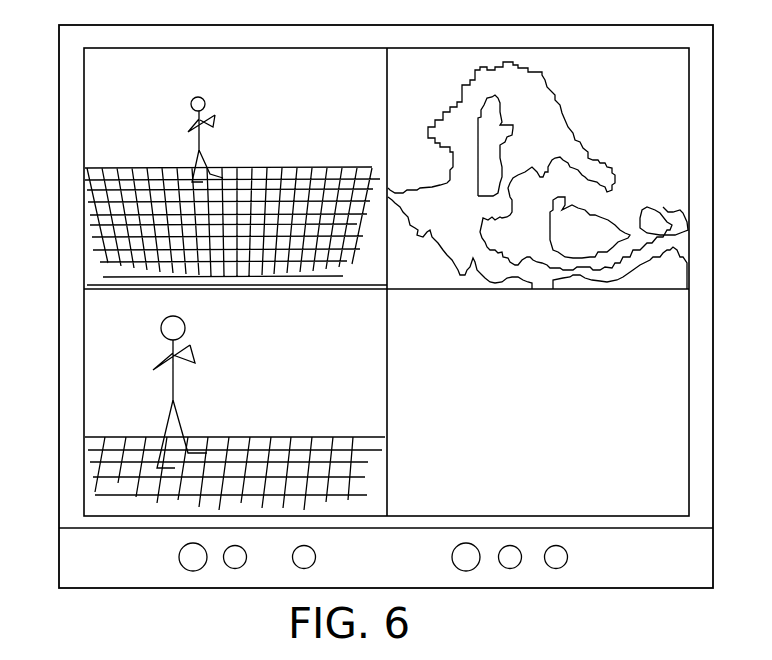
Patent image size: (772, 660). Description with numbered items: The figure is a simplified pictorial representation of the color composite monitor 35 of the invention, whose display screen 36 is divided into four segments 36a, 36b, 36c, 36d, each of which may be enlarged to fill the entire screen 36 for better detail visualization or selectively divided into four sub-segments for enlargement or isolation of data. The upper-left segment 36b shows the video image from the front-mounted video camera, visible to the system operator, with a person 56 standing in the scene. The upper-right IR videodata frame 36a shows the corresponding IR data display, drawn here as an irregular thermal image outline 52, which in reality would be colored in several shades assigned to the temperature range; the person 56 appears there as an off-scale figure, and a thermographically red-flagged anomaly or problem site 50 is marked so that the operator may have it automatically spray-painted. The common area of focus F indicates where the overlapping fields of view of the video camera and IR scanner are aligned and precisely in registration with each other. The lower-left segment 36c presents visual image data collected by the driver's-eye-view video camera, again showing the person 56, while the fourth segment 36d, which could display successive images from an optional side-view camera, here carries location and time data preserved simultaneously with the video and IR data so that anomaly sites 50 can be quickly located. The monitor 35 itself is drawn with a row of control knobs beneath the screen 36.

The display screen 36 is at (645, 396).
The IR videodata frame 36a is at (673, 118).
The video image segment 36b is at (115, 103).
The driver's-eye-view segment 36c is at (102, 358).
The fourth segment 36d is at (673, 348).
The color composite monitor 35 is at (603, 580).
The problem site 50 is at (590, 247).
The thermal image outline 52 is at (575, 148).
The person 56 is at (197, 97).
The common area of focus F is at (137, 142).